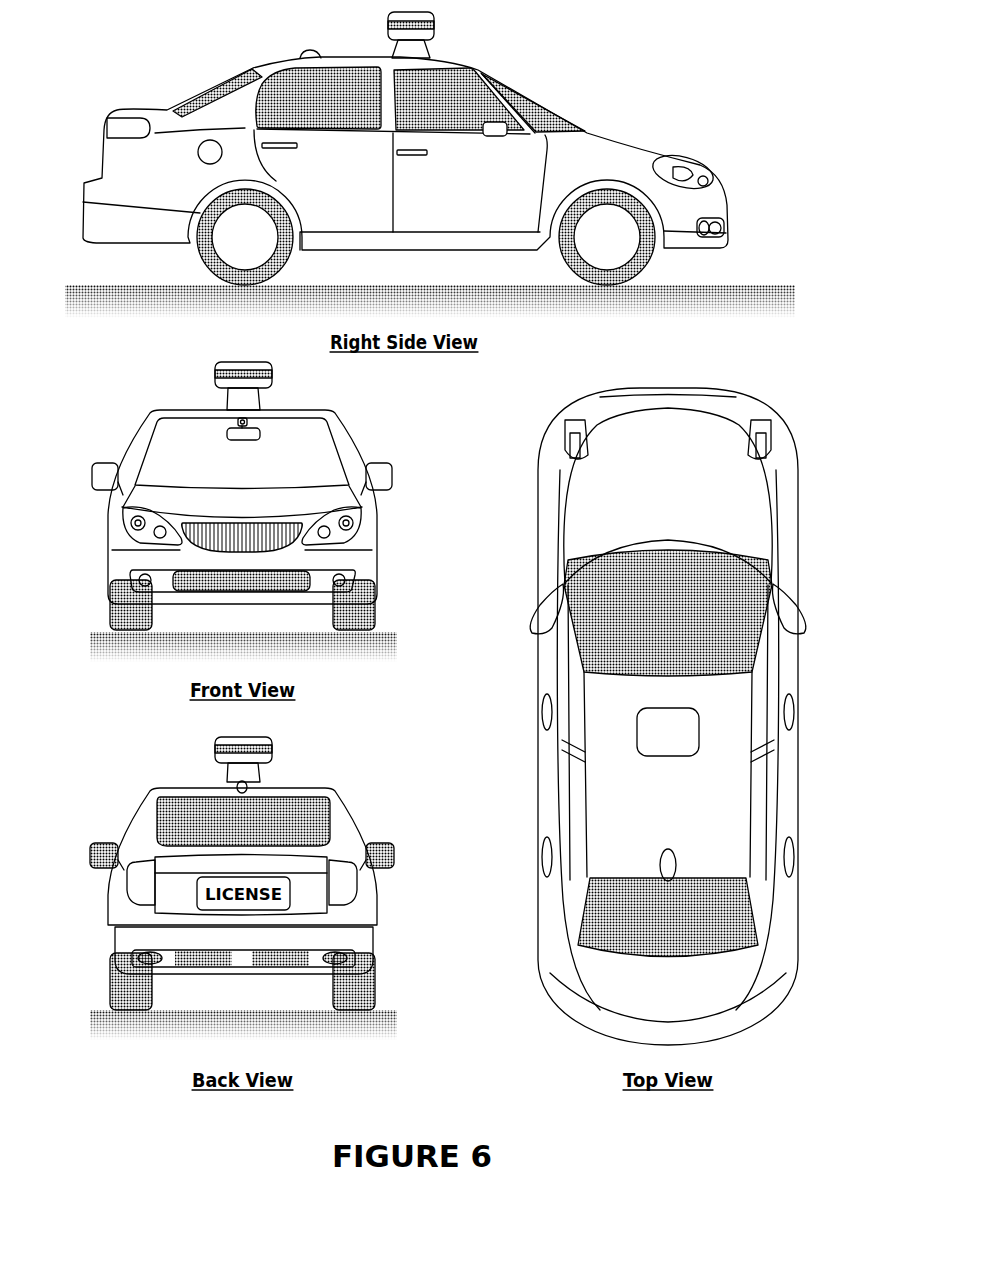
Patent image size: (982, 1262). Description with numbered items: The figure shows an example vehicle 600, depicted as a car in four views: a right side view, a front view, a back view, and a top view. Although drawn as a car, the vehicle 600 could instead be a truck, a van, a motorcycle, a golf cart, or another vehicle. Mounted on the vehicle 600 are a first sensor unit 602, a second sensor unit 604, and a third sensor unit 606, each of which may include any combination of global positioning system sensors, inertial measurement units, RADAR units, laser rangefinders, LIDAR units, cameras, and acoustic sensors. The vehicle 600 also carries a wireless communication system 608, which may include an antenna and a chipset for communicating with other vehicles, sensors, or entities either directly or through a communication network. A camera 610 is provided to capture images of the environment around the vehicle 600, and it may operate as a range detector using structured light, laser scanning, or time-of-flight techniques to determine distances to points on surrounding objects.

The vehicle 600 is at (80, 98).
The first sensor unit 602 is at (436, 32).
The second sensor unit 604 is at (725, 228).
The third sensor unit 606 is at (716, 178).
The wireless communication system 608 is at (302, 50).
The camera 610 is at (258, 422).